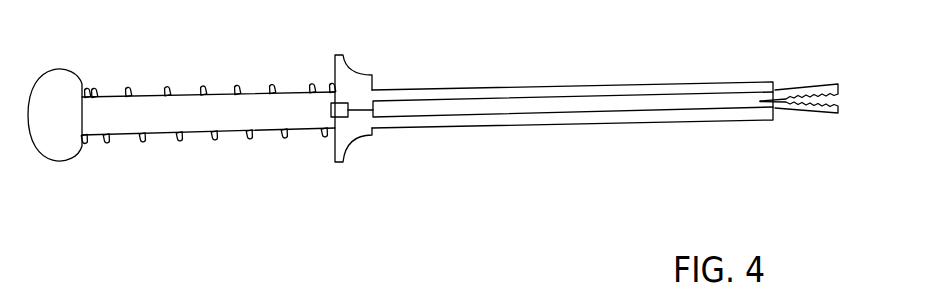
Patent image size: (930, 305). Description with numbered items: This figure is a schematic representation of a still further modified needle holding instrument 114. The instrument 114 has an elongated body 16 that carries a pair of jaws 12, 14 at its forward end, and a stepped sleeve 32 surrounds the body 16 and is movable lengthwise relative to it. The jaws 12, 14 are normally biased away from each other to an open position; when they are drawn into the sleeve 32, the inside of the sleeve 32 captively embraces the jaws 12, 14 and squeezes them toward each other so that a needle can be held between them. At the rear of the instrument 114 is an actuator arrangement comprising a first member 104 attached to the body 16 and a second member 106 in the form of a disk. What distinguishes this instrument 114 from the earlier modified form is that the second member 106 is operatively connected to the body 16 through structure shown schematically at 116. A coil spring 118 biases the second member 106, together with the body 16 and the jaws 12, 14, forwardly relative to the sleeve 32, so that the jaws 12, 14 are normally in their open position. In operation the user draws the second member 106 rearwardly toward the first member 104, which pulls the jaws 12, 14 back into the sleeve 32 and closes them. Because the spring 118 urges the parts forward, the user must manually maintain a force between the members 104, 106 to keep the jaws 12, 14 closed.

The jaw 12 is at (827, 85).
The jaw 14 is at (820, 110).
The body 16 is at (470, 105).
The stepped sleeve 32 is at (603, 89).
The first member 104 is at (73, 81).
The second member 106 is at (362, 77).
The needle holding instrument 114 is at (590, 178).
The connecting structure 116 is at (338, 120).
The coil spring 118 is at (168, 85).